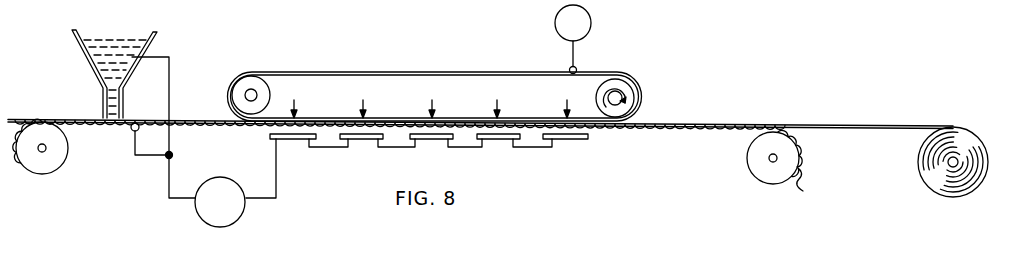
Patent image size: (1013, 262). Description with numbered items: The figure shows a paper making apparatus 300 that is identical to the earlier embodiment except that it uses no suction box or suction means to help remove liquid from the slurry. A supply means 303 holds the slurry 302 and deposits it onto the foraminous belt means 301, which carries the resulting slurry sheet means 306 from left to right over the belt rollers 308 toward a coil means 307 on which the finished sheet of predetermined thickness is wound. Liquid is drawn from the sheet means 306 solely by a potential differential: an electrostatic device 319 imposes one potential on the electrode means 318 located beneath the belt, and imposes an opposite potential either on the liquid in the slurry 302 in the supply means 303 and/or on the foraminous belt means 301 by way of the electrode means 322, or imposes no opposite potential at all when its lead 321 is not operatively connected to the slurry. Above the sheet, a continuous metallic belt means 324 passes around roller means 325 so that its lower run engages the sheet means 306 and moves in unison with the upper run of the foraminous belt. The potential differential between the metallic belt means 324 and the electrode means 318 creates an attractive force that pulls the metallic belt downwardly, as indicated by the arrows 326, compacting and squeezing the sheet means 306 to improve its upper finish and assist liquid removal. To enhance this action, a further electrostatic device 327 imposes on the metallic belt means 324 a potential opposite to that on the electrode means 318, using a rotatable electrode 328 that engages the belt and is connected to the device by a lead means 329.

The paper making apparatus 300 is at (696, 68).
The foraminous belt means 301 is at (80, 128).
The slurry 302 is at (110, 73).
The supply means 303 is at (155, 35).
The sheet means 306 is at (788, 122).
The coil means 307 is at (928, 164).
The belt rollers 308 is at (55, 163).
The electrode means 318 is at (299, 141).
The electrostatic device 319 is at (234, 209).
The lead 321 is at (167, 192).
The electrode means 322 is at (131, 130).
The continuous metallic belt means 324 is at (388, 73).
The roller means 325 is at (269, 93).
The arrows 326 is at (433, 101).
The electrostatic device 327 is at (586, 26).
The rotatable electrode 328 is at (577, 70).
The lead means 329 is at (577, 57).